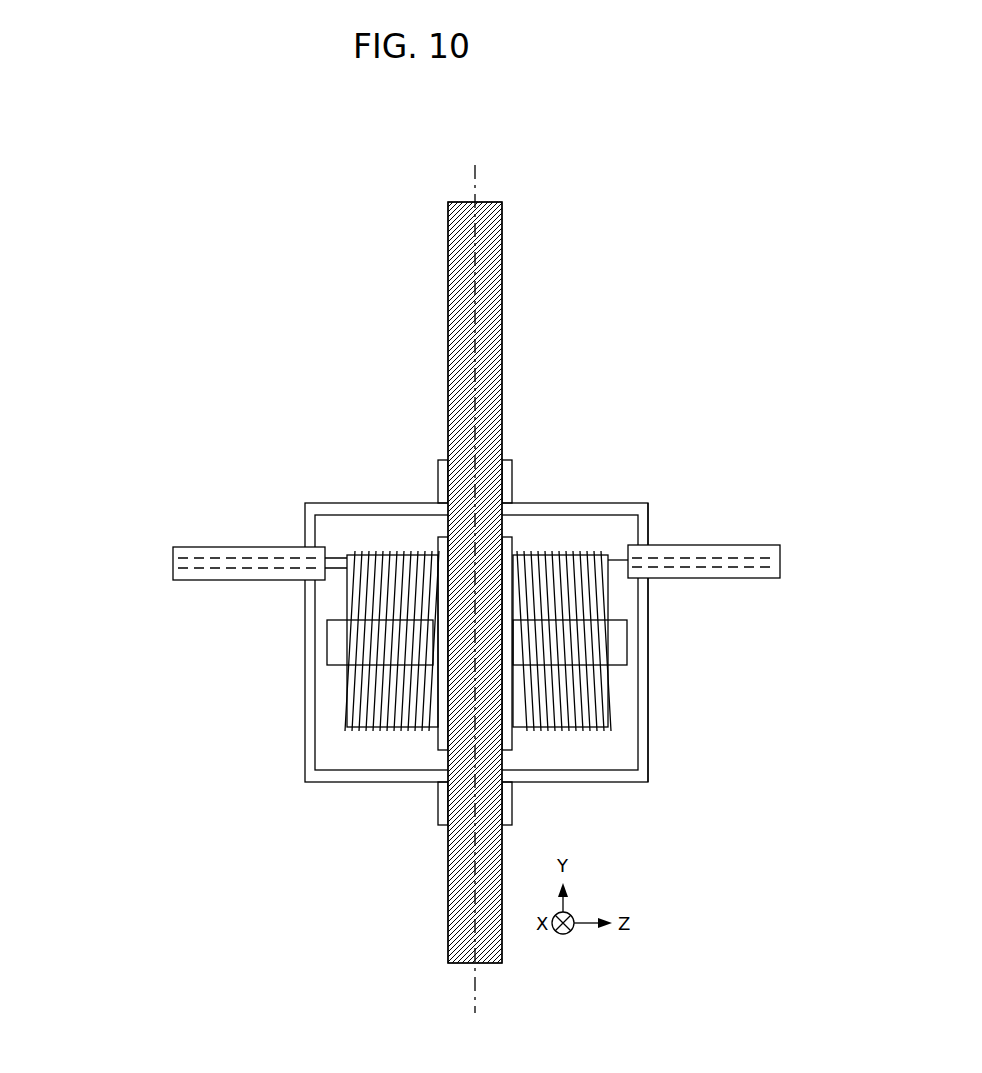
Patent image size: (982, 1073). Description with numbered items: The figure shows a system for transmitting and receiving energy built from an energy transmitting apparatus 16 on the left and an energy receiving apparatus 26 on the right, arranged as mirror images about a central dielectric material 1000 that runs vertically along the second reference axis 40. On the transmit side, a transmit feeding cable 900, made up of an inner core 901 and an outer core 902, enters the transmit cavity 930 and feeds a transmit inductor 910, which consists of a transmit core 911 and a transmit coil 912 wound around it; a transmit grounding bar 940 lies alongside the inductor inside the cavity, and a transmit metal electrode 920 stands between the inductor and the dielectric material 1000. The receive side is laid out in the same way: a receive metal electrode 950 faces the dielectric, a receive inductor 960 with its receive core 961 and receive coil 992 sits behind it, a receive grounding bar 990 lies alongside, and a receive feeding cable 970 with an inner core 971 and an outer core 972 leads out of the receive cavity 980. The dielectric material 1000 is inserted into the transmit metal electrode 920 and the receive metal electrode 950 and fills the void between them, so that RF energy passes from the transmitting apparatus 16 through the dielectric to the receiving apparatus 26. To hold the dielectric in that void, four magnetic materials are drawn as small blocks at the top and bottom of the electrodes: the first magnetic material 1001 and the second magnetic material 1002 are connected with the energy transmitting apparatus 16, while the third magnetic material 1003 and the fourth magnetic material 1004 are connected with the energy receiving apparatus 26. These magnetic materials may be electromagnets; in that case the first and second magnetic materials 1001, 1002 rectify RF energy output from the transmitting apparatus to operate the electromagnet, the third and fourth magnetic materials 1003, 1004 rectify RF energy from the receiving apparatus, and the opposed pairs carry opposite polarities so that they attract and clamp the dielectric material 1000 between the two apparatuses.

The second reference axis 40 is at (476, 172).
The dielectric material 1000 is at (503, 244).
The first magnetic material 1001 is at (438, 470).
The second magnetic material 1002 is at (442, 800).
The third magnetic material 1003 is at (512, 468).
The fourth magnetic material 1004 is at (512, 812).
The energy transmitting apparatus 16 is at (252, 412).
The energy receiving apparatus 26 is at (667, 409).
The transmit feeding cable 900 is at (222, 573).
The inner core of the transmit feeding cable 901 is at (183, 565).
The outer core of the transmit feeding cable 902 is at (195, 552).
The transmit inductor 910 is at (335, 646).
The transmit core 911 is at (331, 593).
The transmit coil 912 is at (375, 552).
The transmit metal electrode 920 is at (438, 545).
The transmit cavity 930 is at (305, 503).
The transmit grounding bar 940 is at (327, 640).
The receive metal electrode 950 is at (513, 540).
The receive inductor 960 is at (620, 627).
The receive core 961 is at (621, 687).
The receive feeding cable 970 is at (694, 561).
The inner core of the receive feeding cable 971 is at (745, 578).
The outer core of the receive feeding cable 972 is at (715, 548).
The receive cavity 980 is at (648, 503).
The receive grounding bar 990 is at (627, 655).
The second coil winding 992 is at (570, 740).